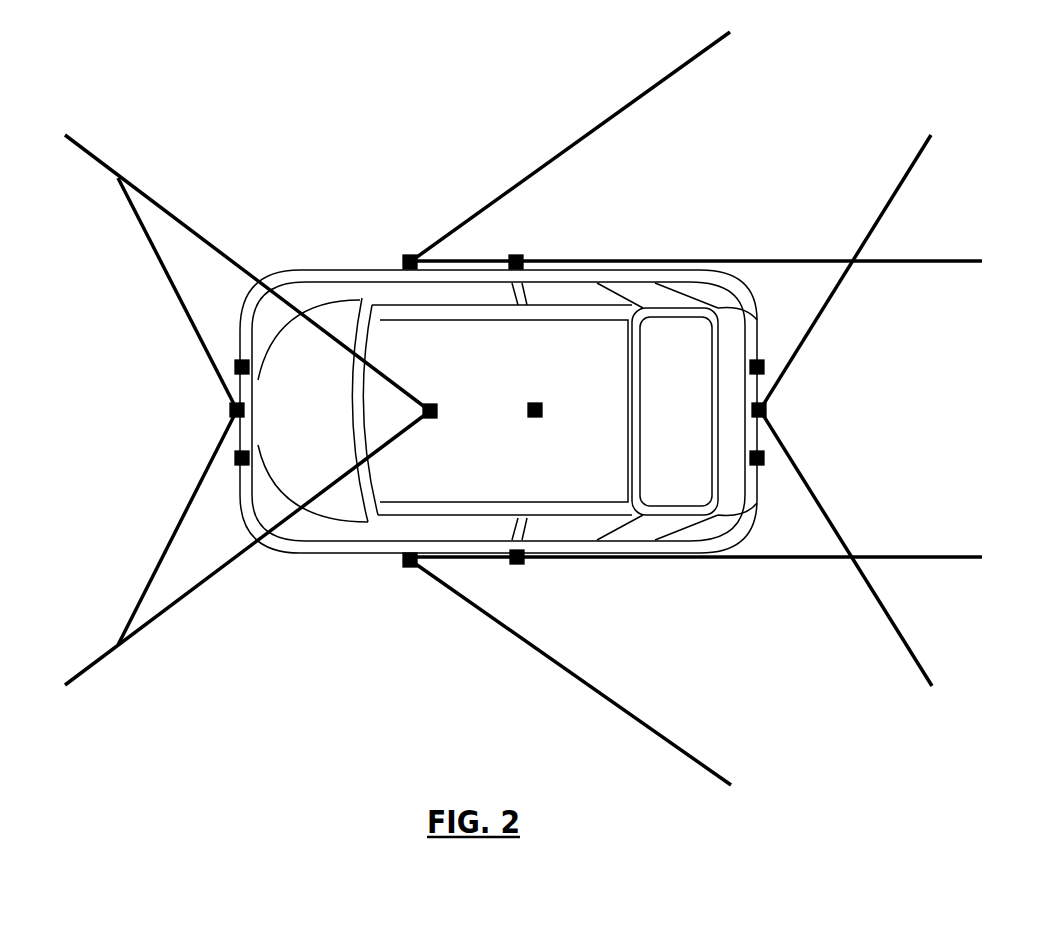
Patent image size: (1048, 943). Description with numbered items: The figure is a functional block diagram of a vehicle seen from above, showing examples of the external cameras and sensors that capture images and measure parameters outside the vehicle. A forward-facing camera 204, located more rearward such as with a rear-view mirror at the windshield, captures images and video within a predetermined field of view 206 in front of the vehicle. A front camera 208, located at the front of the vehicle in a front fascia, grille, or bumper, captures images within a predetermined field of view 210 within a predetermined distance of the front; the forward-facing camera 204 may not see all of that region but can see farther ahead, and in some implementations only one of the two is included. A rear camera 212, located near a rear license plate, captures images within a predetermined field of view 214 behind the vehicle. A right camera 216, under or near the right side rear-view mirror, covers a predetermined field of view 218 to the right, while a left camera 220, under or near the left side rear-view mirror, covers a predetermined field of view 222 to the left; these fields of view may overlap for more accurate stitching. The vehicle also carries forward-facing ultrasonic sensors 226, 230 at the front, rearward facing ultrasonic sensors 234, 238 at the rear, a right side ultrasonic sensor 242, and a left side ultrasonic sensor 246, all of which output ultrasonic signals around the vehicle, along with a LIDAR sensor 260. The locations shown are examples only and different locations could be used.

The forward-facing camera 204 is at (437, 411).
The predetermined field of view 206 is at (217, 250).
The front camera 208 is at (237, 410).
The predetermined field of view 210 is at (159, 258).
The rear camera 212 is at (766, 408).
The predetermined field of view 214 is at (917, 160).
The right camera 216 is at (406, 255).
The predetermined field of view 218 is at (650, 89).
The left camera 220 is at (410, 567).
The predetermined field of view 222 is at (635, 718).
The forward-facing ultrasonic sensor 226 is at (242, 367).
The forward-facing ultrasonic sensor 230 is at (242, 458).
The rearward facing ultrasonic sensor 234 is at (763, 367).
The rearward facing ultrasonic sensor 238 is at (764, 458).
The right side ultrasonic sensor 242 is at (516, 263).
The left side ultrasonic sensor 246 is at (518, 557).
The LIDAR sensor 260 is at (542, 410).